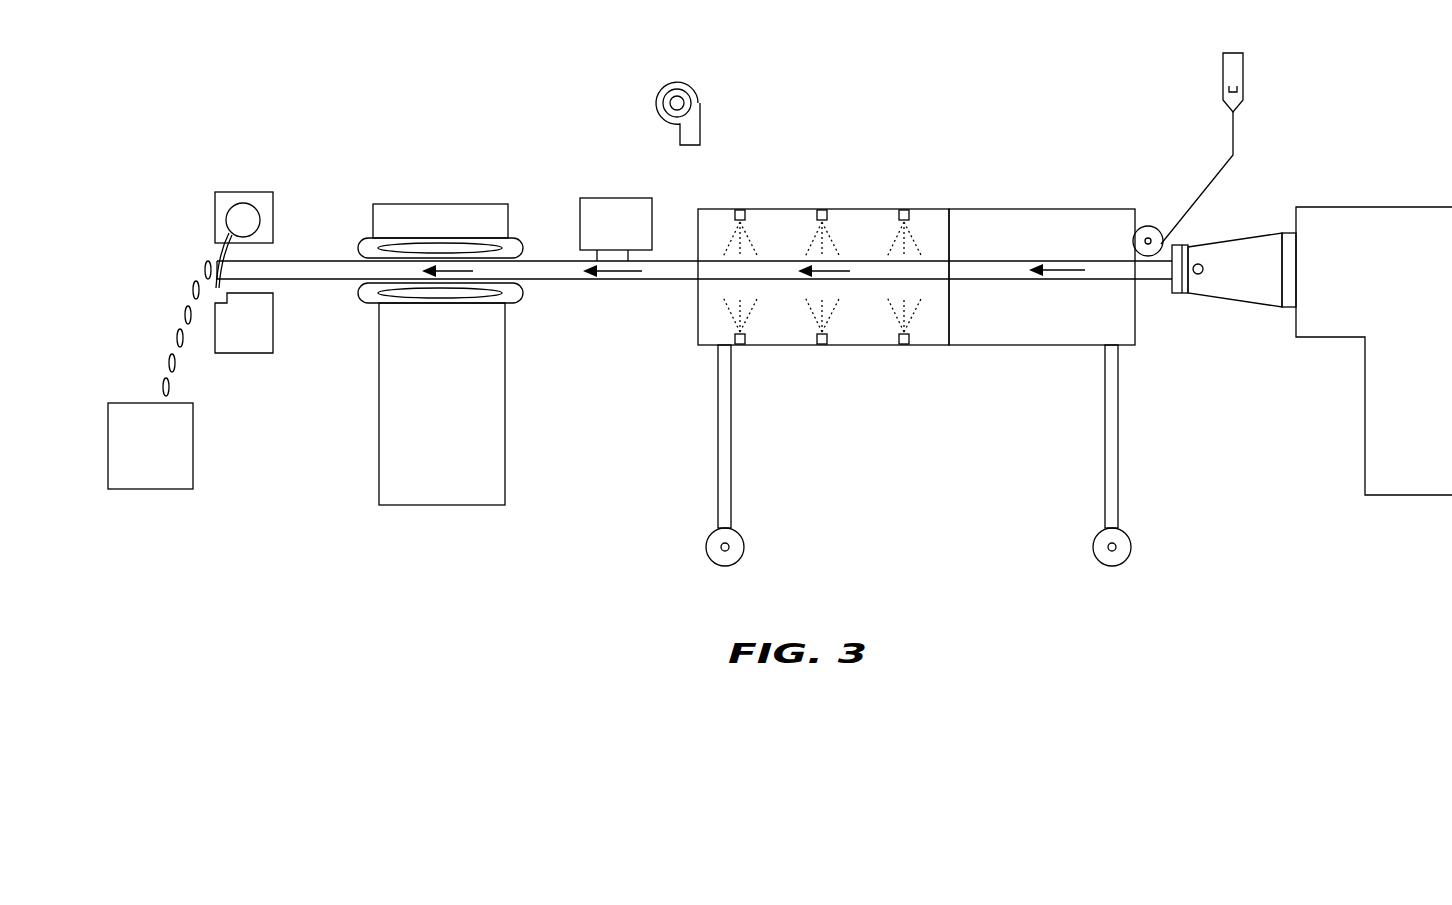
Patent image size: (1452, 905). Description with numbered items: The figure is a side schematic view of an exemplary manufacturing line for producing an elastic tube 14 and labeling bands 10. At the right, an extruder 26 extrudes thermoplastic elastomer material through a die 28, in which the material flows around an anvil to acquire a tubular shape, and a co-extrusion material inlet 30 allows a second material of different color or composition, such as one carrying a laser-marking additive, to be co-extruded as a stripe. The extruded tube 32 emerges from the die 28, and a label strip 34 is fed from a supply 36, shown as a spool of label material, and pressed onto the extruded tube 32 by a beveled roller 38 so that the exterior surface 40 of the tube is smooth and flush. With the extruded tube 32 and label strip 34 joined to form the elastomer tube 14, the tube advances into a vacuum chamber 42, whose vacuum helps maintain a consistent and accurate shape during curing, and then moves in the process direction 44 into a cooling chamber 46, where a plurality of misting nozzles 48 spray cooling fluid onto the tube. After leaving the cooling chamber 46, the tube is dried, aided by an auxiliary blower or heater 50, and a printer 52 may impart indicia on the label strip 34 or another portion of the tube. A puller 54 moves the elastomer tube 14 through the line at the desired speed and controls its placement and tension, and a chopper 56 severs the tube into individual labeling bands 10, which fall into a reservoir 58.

The labeling bands 10 is at (192, 291).
The elastic tube 14 is at (301, 257).
The extruder 26 is at (1356, 283).
The die 28 is at (1259, 280).
The co-extrusion material inlet 30 is at (1194, 292).
The extruded tube 32 is at (1152, 272).
The label strip 34 is at (1200, 195).
The supply 36 is at (1223, 78).
The roller 38 is at (1148, 227).
The exterior surface 40 is at (658, 260).
The vacuum chamber 42 is at (1053, 319).
The process direction 44 is at (850, 268).
The cooling chamber 46 is at (878, 328).
The misting nozzles 48 is at (822, 208).
The auxiliary blower or heater 50 is at (700, 100).
The printer 52 is at (629, 241).
The puller 54 is at (456, 357).
The chopper 56 is at (257, 334).
The reservoir 58 is at (163, 453).